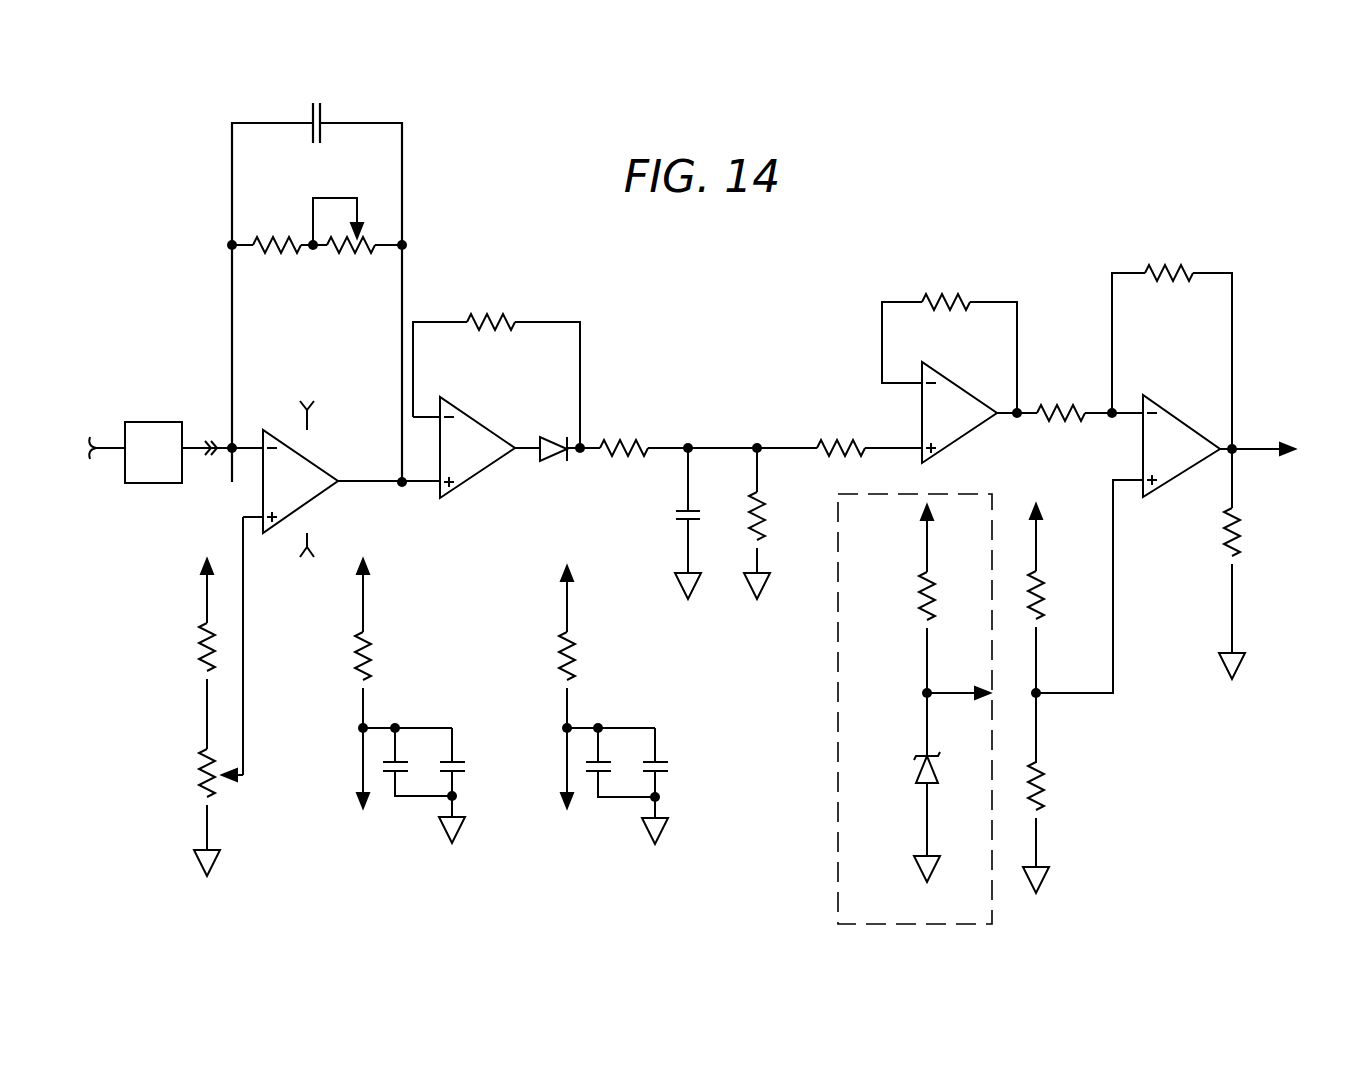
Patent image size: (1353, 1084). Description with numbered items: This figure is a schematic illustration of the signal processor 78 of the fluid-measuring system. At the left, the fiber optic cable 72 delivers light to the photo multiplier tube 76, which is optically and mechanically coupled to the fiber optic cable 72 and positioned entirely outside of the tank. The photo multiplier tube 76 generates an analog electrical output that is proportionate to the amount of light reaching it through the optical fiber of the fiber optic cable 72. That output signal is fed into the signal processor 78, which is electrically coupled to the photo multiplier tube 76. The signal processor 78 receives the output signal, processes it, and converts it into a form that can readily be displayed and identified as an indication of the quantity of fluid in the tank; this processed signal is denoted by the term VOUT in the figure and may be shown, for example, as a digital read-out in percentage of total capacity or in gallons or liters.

The fiber optic cable 72 is at (109, 451).
The photo multiplier tube 76 is at (167, 422).
The signal processor 78 is at (950, 171).